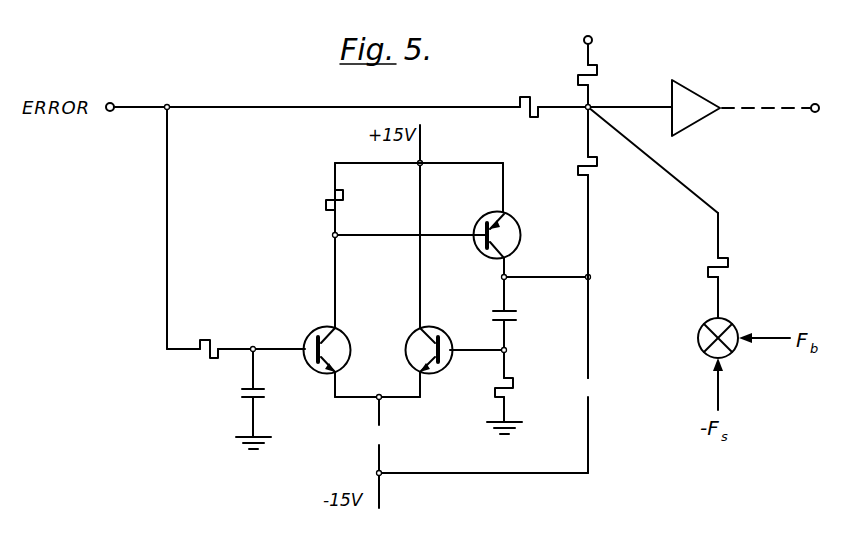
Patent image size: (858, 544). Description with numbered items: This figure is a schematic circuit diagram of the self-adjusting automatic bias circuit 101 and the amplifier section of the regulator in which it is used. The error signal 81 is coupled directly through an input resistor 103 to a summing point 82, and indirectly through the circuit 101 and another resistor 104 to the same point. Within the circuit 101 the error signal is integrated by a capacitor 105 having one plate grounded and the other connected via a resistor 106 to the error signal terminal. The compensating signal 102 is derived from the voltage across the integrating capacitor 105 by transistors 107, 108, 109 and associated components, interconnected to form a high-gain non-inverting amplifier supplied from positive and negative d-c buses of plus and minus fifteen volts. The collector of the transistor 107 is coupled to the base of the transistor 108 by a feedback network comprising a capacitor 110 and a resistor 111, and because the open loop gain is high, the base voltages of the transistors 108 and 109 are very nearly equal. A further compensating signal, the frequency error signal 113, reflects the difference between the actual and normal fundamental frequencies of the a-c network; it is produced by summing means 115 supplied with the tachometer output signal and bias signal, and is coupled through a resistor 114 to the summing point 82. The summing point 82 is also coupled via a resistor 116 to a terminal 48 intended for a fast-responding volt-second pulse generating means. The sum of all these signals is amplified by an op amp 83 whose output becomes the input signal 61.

The error signal 81 is at (113, 99).
The terminal 48 is at (592, 38).
The resistor 116 is at (597, 71).
The resistor 104 is at (598, 162).
The summing point 82 is at (586, 109).
The input resistor 103 is at (521, 95).
The op amp 83 is at (704, 95).
The input signal 61 is at (819, 104).
The compensating signal 102 is at (590, 232).
The resistor 114 is at (730, 263).
The frequency error signal 113 is at (720, 295).
The summing means 115 is at (697, 340).
The transistor 107 is at (520, 223).
The capacitor 110 is at (517, 314).
The resistor 111 is at (513, 383).
The automatic bias circuit 101 is at (303, 265).
The transistor 109 is at (313, 333).
The transistor 108 is at (410, 337).
The resistor 106 is at (205, 338).
The capacitor 105 is at (240, 395).